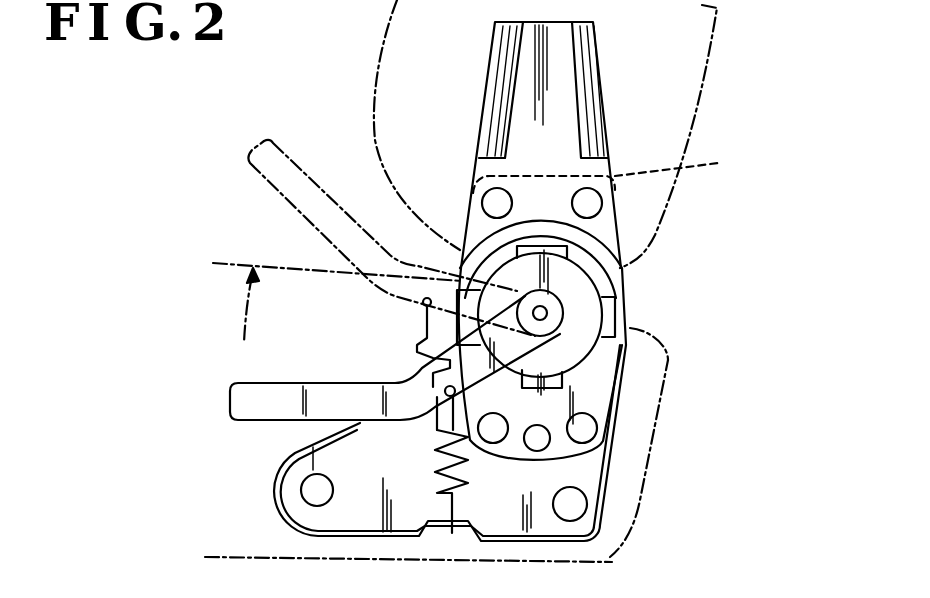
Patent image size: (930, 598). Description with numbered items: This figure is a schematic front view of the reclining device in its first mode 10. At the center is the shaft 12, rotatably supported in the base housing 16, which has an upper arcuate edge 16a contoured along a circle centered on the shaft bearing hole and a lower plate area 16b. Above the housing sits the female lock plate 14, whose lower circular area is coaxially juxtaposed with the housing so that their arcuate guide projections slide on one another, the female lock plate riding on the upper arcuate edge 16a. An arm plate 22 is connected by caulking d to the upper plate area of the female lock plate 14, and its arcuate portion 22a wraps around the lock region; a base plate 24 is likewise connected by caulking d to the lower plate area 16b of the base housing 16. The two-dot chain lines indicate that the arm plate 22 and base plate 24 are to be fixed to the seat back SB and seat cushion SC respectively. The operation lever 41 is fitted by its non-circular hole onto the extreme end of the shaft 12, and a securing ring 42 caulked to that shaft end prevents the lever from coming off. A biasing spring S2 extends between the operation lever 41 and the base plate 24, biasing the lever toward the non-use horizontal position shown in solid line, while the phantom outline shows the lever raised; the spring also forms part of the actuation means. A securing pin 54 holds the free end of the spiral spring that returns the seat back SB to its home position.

The first mode 10 is at (736, 241).
The shaft 12 is at (550, 311).
The female lock plate 14 is at (612, 171).
The base housing 16 is at (600, 385).
The upper arcuate edge 16a is at (620, 273).
The lower plate area 16b is at (545, 445).
The arm plate 22 is at (605, 63).
The arcuate portion of upper arm 22a is at (625, 262).
The base plate 24 is at (275, 490).
The operation lever 41 is at (287, 150).
The securing ring 42 is at (552, 330).
The securing pin 54 is at (560, 456).
The caulking d is at (567, 420).
The biasing spring S2 is at (470, 468).
The seat back SB is at (703, 88).
The seat cushion SC is at (672, 360).